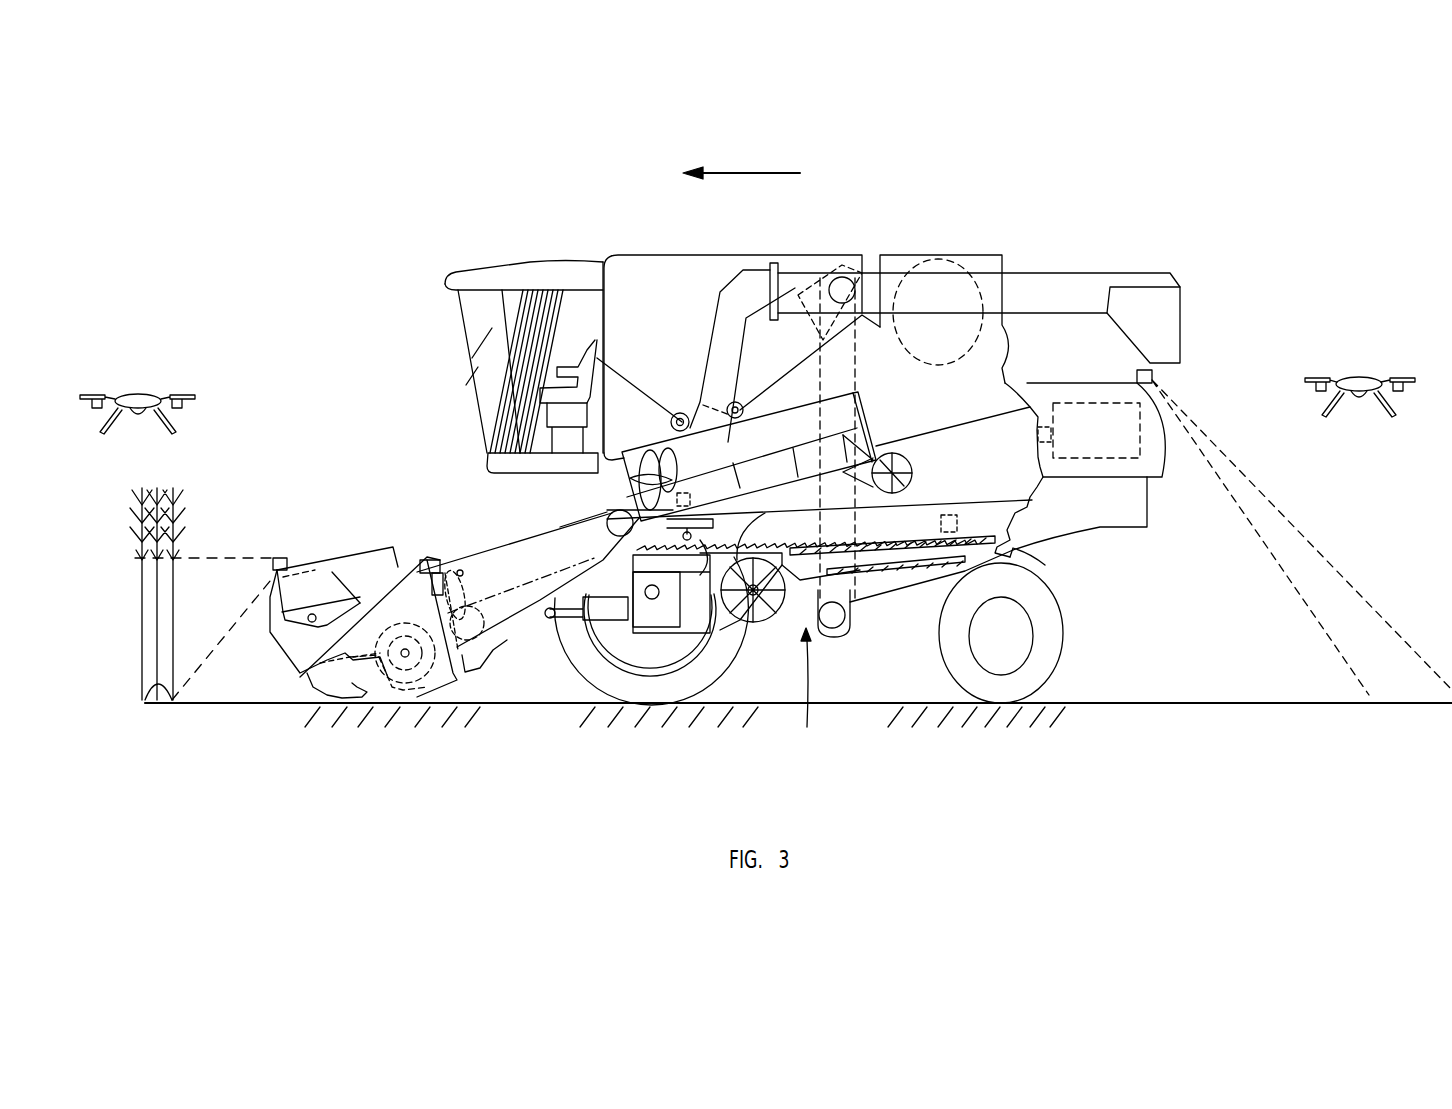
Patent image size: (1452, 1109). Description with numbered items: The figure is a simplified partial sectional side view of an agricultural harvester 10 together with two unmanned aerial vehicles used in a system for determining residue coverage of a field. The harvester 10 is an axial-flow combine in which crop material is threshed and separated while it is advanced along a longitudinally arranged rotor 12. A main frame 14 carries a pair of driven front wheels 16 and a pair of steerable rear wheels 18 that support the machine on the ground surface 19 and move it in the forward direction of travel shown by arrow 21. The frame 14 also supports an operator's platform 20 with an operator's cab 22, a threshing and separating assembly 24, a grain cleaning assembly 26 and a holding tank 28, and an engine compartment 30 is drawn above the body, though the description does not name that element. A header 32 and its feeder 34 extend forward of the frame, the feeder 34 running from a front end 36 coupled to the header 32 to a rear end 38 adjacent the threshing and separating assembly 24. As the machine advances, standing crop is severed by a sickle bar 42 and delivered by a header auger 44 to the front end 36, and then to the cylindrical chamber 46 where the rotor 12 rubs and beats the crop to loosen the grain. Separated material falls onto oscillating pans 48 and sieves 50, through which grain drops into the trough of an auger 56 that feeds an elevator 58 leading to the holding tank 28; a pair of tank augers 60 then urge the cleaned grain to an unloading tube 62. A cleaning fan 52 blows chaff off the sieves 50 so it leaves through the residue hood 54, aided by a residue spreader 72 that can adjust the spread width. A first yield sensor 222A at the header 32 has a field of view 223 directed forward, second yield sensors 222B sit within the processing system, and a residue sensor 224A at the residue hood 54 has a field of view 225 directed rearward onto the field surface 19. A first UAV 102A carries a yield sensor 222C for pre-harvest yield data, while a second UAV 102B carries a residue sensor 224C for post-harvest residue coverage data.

The harvester 10 is at (492, 224).
The rotor 12 is at (668, 447).
The main frame 14 is at (1027, 550).
The front wheels 16 is at (600, 672).
The rear wheels 18 is at (1057, 643).
The ground surface 19 is at (145, 700).
The operator's platform 20 is at (495, 465).
The forward direction of movement 21 is at (768, 172).
The operator's cab 22 is at (478, 366).
The threshing and separating assembly 24 is at (741, 447).
The grain cleaning assembly 26 is at (808, 689).
The holding tank 28 is at (677, 253).
The engine compartment 30 is at (920, 256).
The header 32 is at (309, 554).
The feeder 34 is at (474, 546).
The front end 36 is at (427, 607).
The rear end 38 is at (583, 498).
The sickle bar 42 is at (320, 693).
The header auger 44 is at (420, 690).
The cylindrical chamber 46 is at (783, 407).
The pans 48 is at (752, 530).
The sieves 50 is at (862, 545).
The cleaning fan 52 is at (745, 625).
The residue hood 54 is at (1160, 445).
The auger 56 is at (835, 630).
The elevator 58 is at (858, 337).
The tank augers 60 is at (678, 413).
The unloading tube 62 is at (1050, 287).
The residue spreader 72 is at (1088, 405).
The first UAV 102A is at (158, 391).
The second UAV 102B is at (1384, 375).
The first yield sensor 222A is at (279, 559).
The second yield sensor 222B is at (683, 492).
The yield sensor 222C is at (138, 412).
The field of view 223 is at (215, 652).
The residue sensor 224A is at (1155, 375).
The residue sensor 224C is at (1362, 395).
The field of view 225 is at (1243, 585).